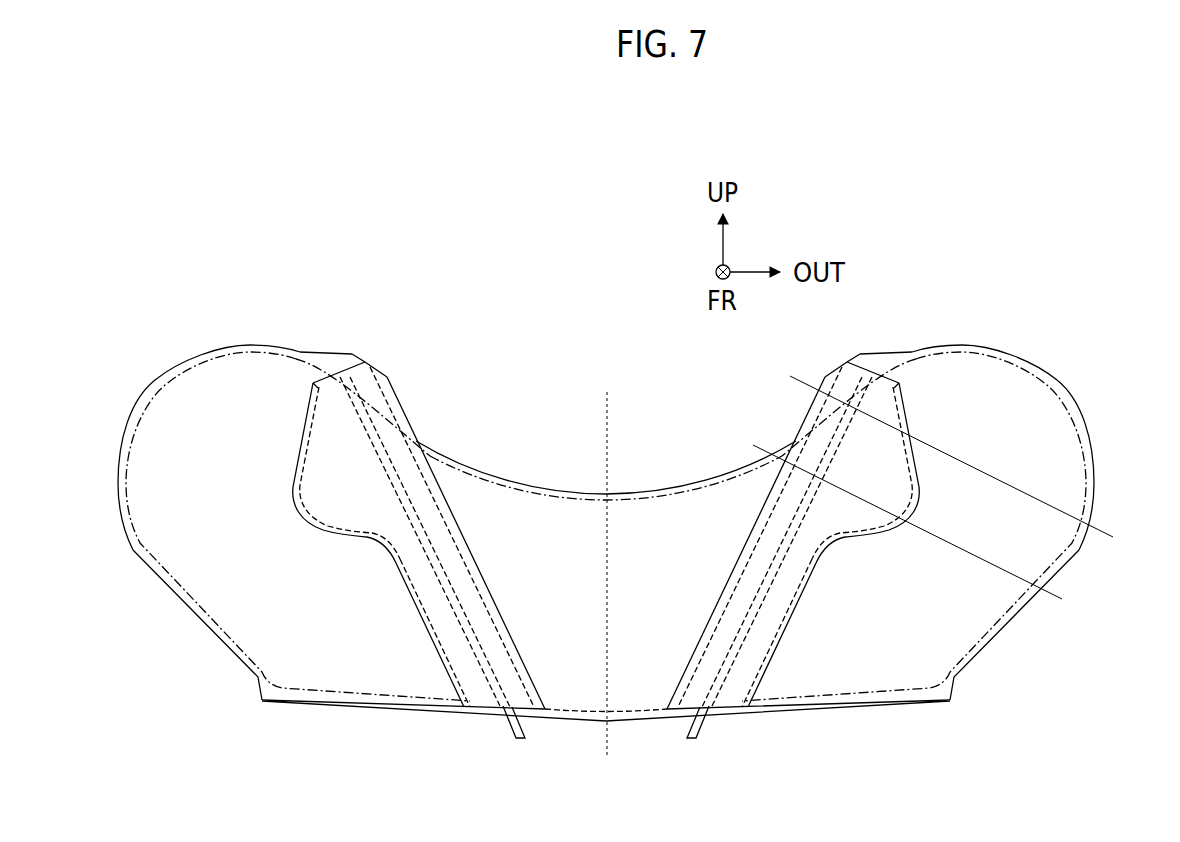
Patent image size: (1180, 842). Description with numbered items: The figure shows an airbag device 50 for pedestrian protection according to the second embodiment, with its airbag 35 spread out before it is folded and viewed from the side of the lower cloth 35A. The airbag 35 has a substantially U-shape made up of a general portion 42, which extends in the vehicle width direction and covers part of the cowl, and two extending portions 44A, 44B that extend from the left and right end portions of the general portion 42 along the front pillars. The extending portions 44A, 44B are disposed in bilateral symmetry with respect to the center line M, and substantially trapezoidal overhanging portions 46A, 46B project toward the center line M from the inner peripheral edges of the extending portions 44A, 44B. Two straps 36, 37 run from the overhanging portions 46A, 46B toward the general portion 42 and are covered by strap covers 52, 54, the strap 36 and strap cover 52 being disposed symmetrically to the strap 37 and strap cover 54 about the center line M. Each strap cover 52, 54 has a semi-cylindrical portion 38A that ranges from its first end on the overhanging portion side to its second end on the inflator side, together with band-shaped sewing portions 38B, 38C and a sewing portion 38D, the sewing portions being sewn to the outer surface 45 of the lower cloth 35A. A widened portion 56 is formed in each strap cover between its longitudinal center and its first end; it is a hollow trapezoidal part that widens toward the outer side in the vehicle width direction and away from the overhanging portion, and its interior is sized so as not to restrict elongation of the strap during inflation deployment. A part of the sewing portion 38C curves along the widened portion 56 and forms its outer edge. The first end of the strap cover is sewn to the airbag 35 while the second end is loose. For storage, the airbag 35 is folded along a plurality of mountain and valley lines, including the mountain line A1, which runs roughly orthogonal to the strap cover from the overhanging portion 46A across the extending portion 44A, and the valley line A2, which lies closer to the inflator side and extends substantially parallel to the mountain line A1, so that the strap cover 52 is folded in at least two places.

The airbag 35 is at (965, 338).
The lower cloth 35A is at (977, 393).
The strap 36 is at (693, 730).
The strap 37 is at (528, 730).
The semi-cylindrical portion 38A is at (450, 633).
The sewing portion 38B is at (480, 570).
The sewing portion 38C is at (425, 605).
The sewing portion 38D is at (352, 354).
The general portion 42 is at (823, 675).
The extending portion 44A is at (1037, 420).
The extending portion 44B is at (175, 420).
The outer surface 45 is at (1040, 553).
The overhanging portion 46A is at (887, 353).
The overhanging portion 46B is at (330, 360).
The airbag device 50 is at (1091, 291).
The strap cover 52 is at (816, 577).
The strap cover 54 is at (398, 577).
The widened portion 56 is at (292, 492).
The mountain line A1 is at (805, 367).
The valley line A2 is at (760, 443).
The center line M is at (620, 395).